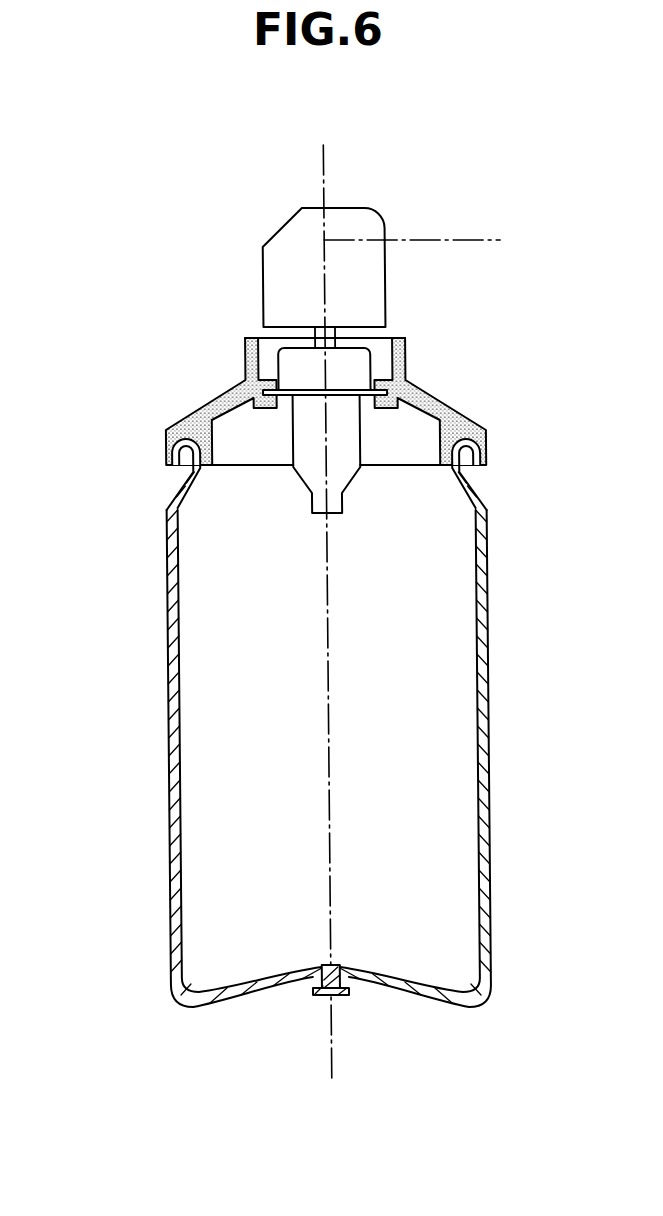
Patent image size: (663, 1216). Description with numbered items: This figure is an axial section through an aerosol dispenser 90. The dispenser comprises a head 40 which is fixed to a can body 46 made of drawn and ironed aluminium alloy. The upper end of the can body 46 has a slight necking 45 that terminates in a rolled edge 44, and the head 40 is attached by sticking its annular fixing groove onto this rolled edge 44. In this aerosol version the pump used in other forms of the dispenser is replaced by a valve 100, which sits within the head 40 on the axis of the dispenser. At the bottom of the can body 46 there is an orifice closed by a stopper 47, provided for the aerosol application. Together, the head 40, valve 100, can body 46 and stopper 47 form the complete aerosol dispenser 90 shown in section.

The head 40 is at (242, 372).
The rolled edge 44 is at (466, 441).
The necking 45 is at (152, 478).
The can body 46 is at (162, 778).
The stopper 47 is at (334, 997).
The aerosol dispenser 90 is at (148, 632).
The valve 100 is at (354, 367).